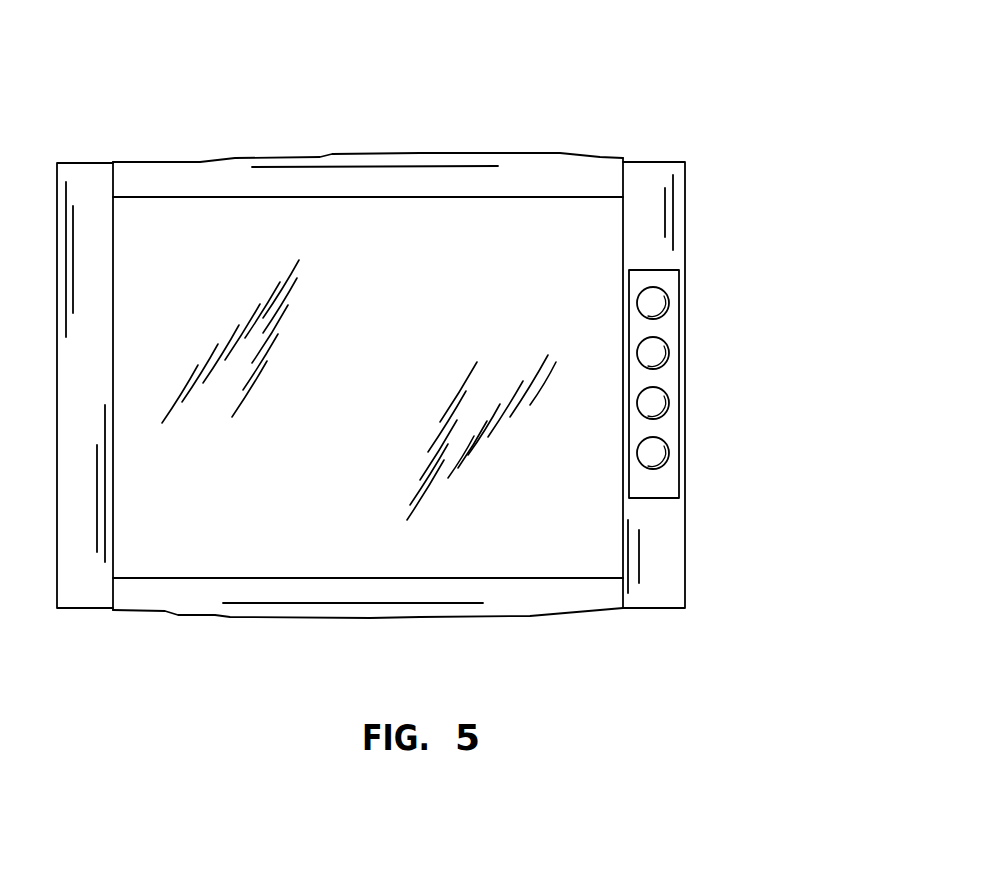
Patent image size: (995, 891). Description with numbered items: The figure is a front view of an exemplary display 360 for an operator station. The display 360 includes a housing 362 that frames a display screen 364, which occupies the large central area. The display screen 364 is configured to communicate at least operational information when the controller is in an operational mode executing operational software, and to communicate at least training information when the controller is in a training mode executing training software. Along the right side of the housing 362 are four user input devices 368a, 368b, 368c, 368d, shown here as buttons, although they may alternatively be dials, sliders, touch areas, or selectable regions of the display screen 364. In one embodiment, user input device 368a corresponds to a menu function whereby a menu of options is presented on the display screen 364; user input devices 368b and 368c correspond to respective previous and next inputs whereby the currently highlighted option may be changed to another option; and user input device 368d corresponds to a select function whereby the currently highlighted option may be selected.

The display 360 is at (610, 110).
The housing 362 is at (212, 157).
The display screen 364 is at (450, 289).
The user input device 368a is at (672, 298).
The user input device 368b is at (672, 353).
The user input device 368c is at (672, 400).
The user input device 368d is at (672, 453).